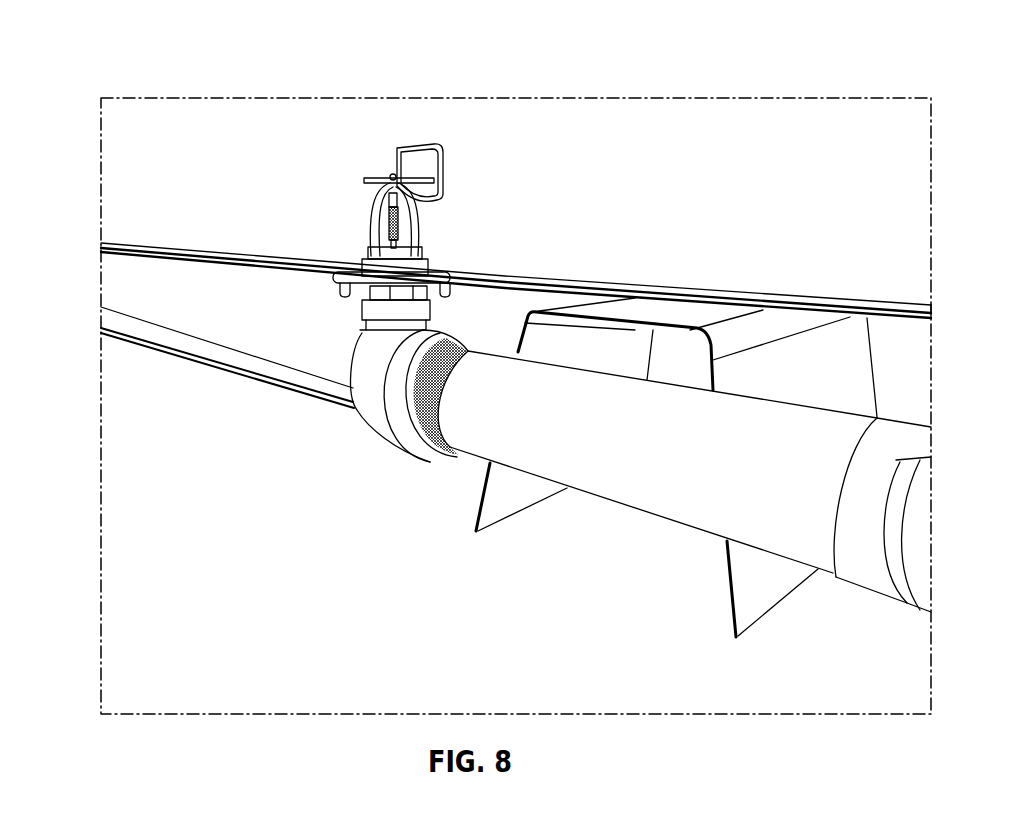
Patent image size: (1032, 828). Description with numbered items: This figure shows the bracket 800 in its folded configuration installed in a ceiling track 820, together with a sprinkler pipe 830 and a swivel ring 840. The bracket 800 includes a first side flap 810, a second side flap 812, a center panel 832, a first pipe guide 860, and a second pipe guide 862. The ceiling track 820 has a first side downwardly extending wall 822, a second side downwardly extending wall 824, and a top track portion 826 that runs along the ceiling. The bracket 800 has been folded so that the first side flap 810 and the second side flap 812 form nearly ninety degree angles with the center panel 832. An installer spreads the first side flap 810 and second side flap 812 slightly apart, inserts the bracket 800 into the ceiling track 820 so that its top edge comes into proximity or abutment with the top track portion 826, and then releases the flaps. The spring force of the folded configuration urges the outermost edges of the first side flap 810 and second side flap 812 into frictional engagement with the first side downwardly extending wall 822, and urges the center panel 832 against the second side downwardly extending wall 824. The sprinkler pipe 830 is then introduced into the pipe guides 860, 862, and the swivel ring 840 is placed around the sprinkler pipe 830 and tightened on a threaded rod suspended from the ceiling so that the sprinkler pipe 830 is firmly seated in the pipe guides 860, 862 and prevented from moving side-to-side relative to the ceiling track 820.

The bracket 800 is at (121, 42).
The first side flap 810 is at (488, 511).
The second side flap 812 is at (730, 604).
The ceiling track 820 is at (90, 245).
The first side downwardly extending wall 822 is at (267, 381).
The second side downwardly extending wall 824 is at (253, 260).
The top track portion 826 is at (277, 317).
The sprinkler pipe 830 is at (740, 430).
The center panel 832 is at (660, 315).
The swivel ring 840 is at (877, 588).
The first pipe guide 860 is at (483, 464).
The second pipe guide 862 is at (717, 544).